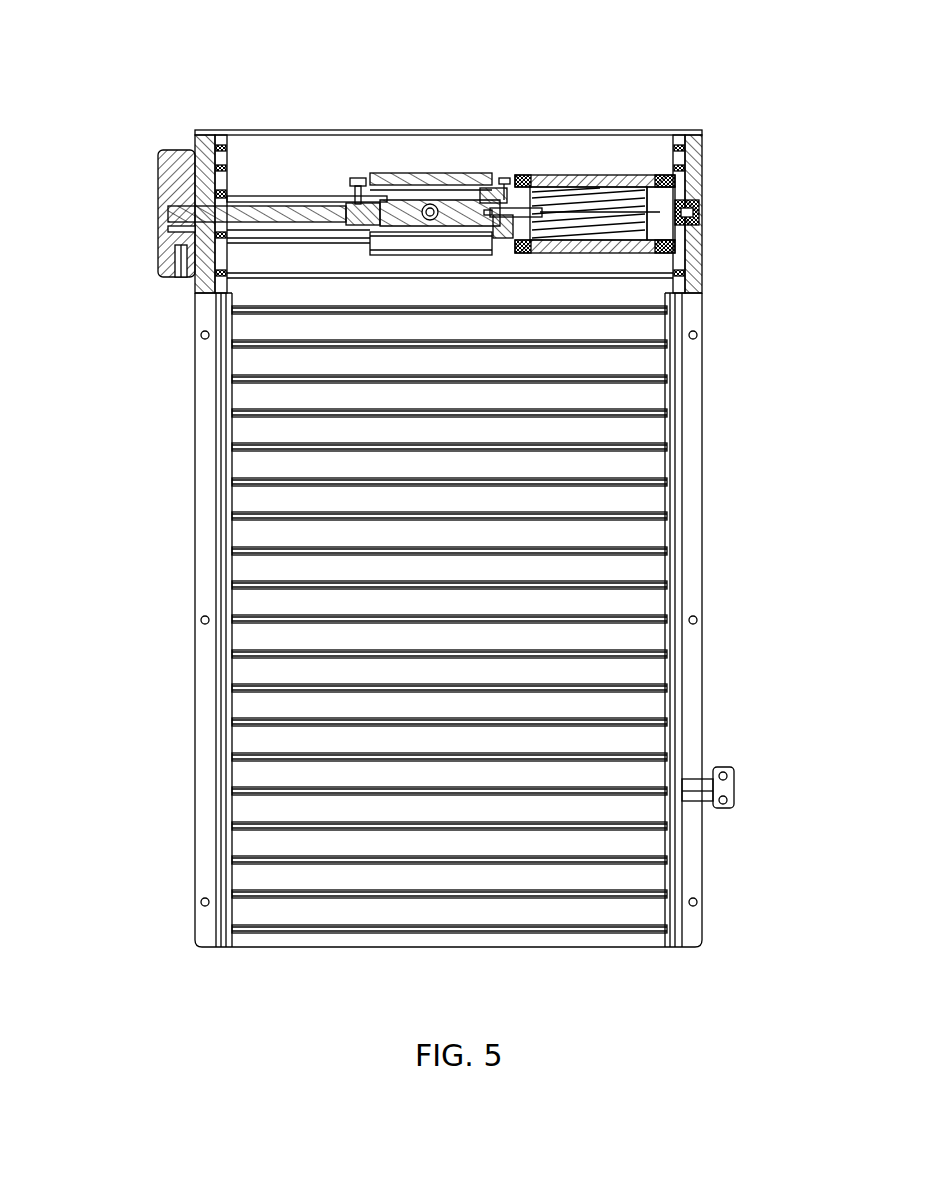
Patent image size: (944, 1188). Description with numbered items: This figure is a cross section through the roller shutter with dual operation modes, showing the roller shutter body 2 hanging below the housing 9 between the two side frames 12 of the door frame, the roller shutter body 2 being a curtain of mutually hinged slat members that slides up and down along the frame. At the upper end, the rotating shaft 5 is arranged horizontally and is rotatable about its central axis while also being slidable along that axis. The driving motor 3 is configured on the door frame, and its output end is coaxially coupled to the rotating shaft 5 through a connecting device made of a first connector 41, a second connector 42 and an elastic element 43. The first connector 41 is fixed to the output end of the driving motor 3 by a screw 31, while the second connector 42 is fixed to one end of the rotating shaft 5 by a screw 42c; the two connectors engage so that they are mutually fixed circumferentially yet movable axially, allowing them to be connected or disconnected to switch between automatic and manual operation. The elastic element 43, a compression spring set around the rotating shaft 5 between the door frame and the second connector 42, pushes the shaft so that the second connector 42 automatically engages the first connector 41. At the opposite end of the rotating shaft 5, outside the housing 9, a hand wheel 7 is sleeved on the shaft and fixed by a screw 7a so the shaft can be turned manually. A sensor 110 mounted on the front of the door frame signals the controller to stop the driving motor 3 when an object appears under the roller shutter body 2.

The roller shutter body 2 is at (327, 622).
The driving motor 3 is at (587, 192).
The rotating shaft 5 is at (240, 200).
The hand wheel 7 is at (173, 160).
The screw 7a is at (180, 235).
The housing 9 is at (667, 132).
The side frames 12 is at (195, 455).
The screw 31 is at (507, 186).
The first connector 41 is at (492, 190).
The second connector 42 is at (420, 178).
The screw 42c is at (361, 176).
The elastic element 43 is at (280, 203).
The sensor 110 is at (718, 778).